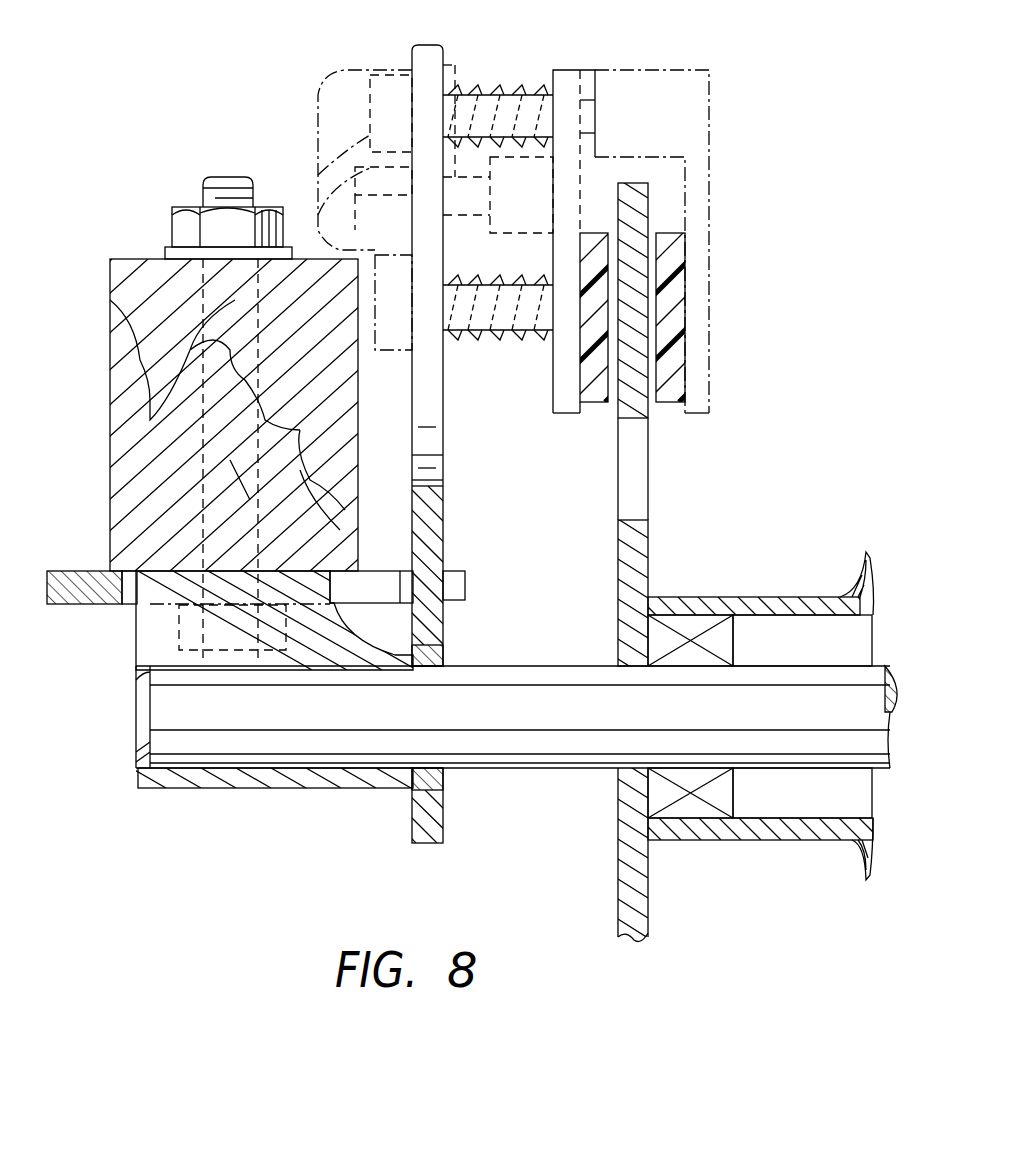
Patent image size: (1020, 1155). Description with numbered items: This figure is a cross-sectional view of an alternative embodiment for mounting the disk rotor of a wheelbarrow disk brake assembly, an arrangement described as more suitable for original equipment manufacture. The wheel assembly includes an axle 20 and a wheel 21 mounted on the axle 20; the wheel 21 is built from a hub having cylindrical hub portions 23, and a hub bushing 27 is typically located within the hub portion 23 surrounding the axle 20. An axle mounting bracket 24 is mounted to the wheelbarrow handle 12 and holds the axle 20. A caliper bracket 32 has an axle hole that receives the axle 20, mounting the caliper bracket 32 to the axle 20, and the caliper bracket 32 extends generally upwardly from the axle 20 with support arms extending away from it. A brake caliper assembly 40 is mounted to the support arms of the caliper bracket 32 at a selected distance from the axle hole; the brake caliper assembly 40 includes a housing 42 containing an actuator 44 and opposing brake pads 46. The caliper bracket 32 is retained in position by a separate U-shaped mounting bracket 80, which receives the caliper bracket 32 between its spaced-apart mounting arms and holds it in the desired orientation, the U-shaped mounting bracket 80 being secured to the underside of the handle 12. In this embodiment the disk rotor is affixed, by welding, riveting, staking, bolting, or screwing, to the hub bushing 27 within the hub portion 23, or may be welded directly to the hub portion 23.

The handle 12 is at (133, 456).
The axle 20 is at (905, 715).
The wheel 21 is at (868, 585).
The hub portion 23 is at (770, 597).
The axle mounting bracket 24 is at (195, 788).
The hub bushing 27 is at (690, 625).
The caliper bracket 32 is at (443, 438).
The brake caliper assembly 40 is at (748, 200).
The housing 42 is at (712, 240).
The actuator 44 is at (528, 172).
The brake pads 46 is at (597, 418).
The U-shaped mounting bracket 80 is at (84, 563).